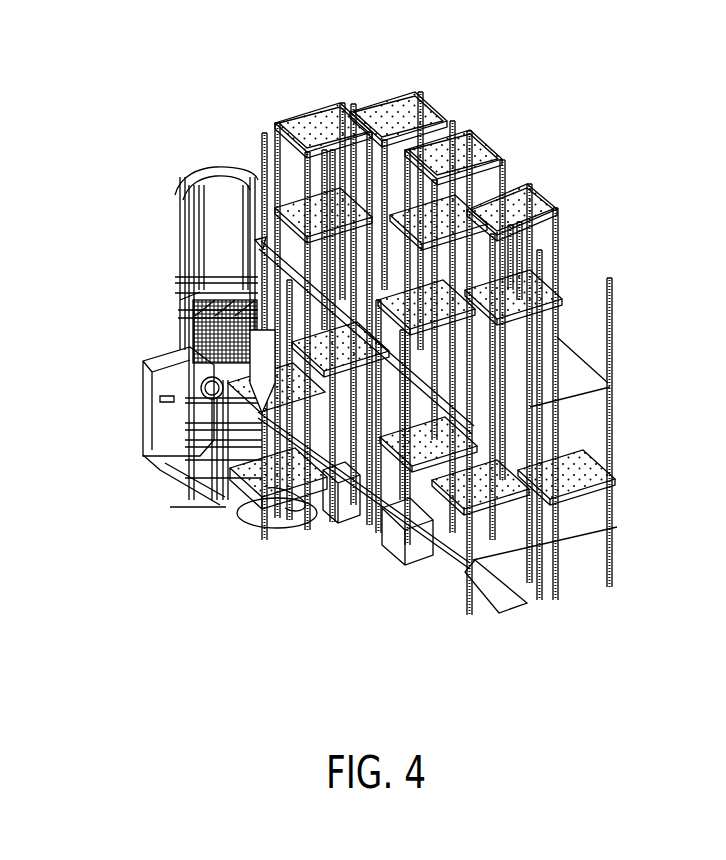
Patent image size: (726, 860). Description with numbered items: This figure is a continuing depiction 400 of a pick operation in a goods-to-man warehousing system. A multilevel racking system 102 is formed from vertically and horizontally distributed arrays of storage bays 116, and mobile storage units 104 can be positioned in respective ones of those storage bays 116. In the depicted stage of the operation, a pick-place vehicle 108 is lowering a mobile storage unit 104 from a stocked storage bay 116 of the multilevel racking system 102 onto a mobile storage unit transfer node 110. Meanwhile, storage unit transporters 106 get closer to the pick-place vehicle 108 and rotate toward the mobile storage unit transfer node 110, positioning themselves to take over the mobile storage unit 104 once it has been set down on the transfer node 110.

The continuing depiction of the pick operation 400 is at (104, 78).
The multilevel racking system 102 is at (612, 392).
The mobile storage unit 104 is at (532, 202).
The storage unit transporter 106 is at (344, 506).
The pick-place vehicle 108 is at (160, 353).
The mobile storage unit transfer node 110 is at (281, 536).
The storage bay 116 is at (474, 124).